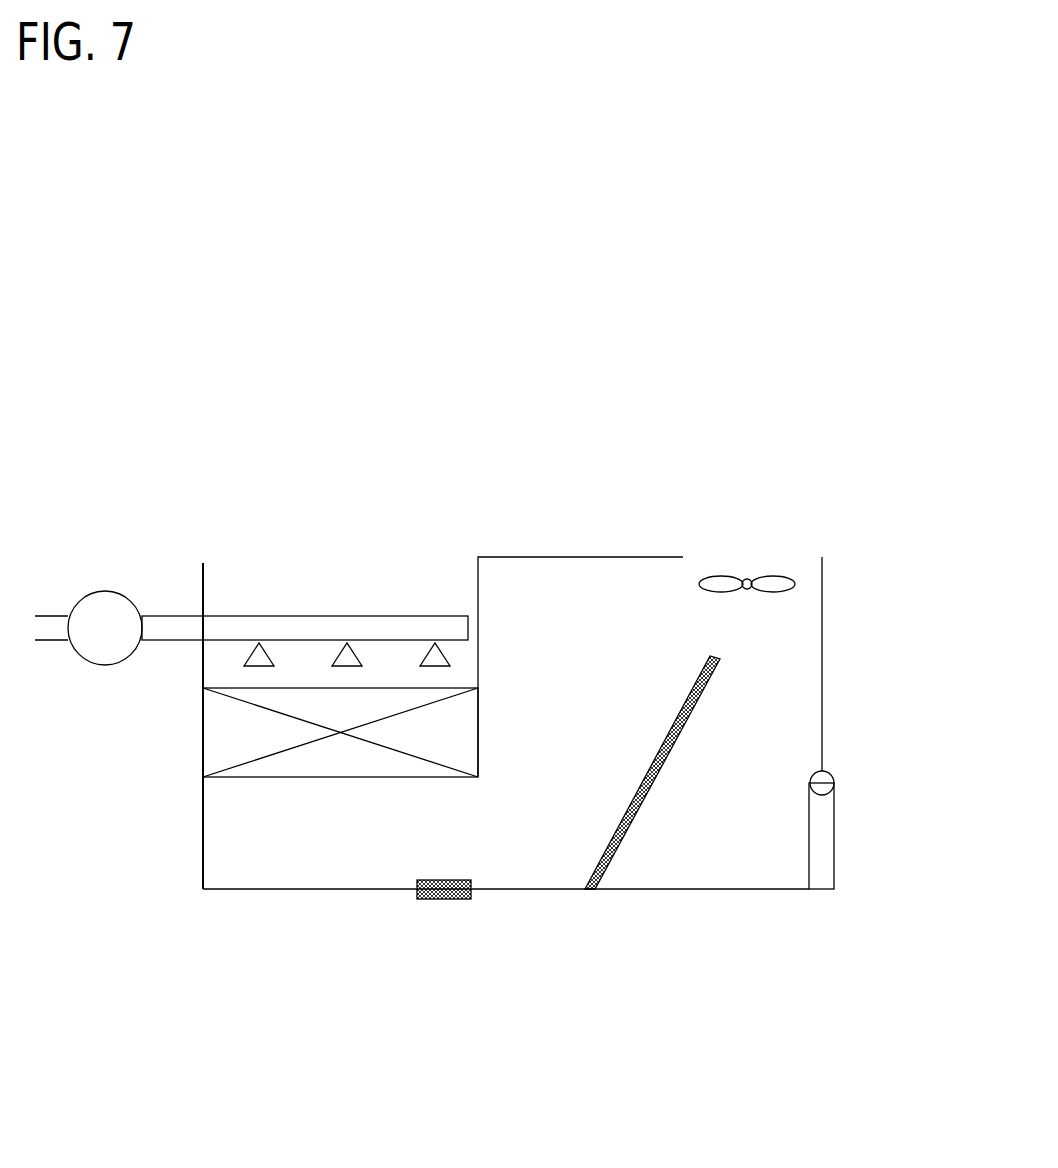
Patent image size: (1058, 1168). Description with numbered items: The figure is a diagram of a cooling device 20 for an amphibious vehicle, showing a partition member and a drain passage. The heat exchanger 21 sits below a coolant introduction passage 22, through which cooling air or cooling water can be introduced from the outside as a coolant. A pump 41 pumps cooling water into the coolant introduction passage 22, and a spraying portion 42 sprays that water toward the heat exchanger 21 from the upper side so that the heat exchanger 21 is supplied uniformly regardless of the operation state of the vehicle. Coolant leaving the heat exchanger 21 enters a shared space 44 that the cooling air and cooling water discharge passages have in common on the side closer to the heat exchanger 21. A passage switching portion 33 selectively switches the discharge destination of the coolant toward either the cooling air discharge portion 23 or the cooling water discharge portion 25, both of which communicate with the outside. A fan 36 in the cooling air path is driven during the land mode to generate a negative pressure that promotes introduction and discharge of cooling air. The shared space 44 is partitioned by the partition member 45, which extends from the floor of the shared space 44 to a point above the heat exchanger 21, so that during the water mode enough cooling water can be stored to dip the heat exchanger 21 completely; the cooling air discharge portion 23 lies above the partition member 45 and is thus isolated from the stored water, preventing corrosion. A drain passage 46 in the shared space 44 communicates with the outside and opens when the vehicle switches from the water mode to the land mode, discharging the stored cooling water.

The cooling device 20 is at (350, 438).
The heat exchanger 21 is at (220, 738).
The coolant introduction passage 22 is at (203, 590).
The cooling air discharge portion 23 is at (793, 562).
The cooling water discharge portion 25 is at (845, 848).
The passage switching portion 33 is at (835, 797).
The fan 36 is at (718, 577).
The pump 41 is at (105, 591).
The spraying portion 42 is at (348, 615).
The shared space 44 is at (581, 719).
The partition member 45 is at (625, 833).
The drain passage 46 is at (443, 900).